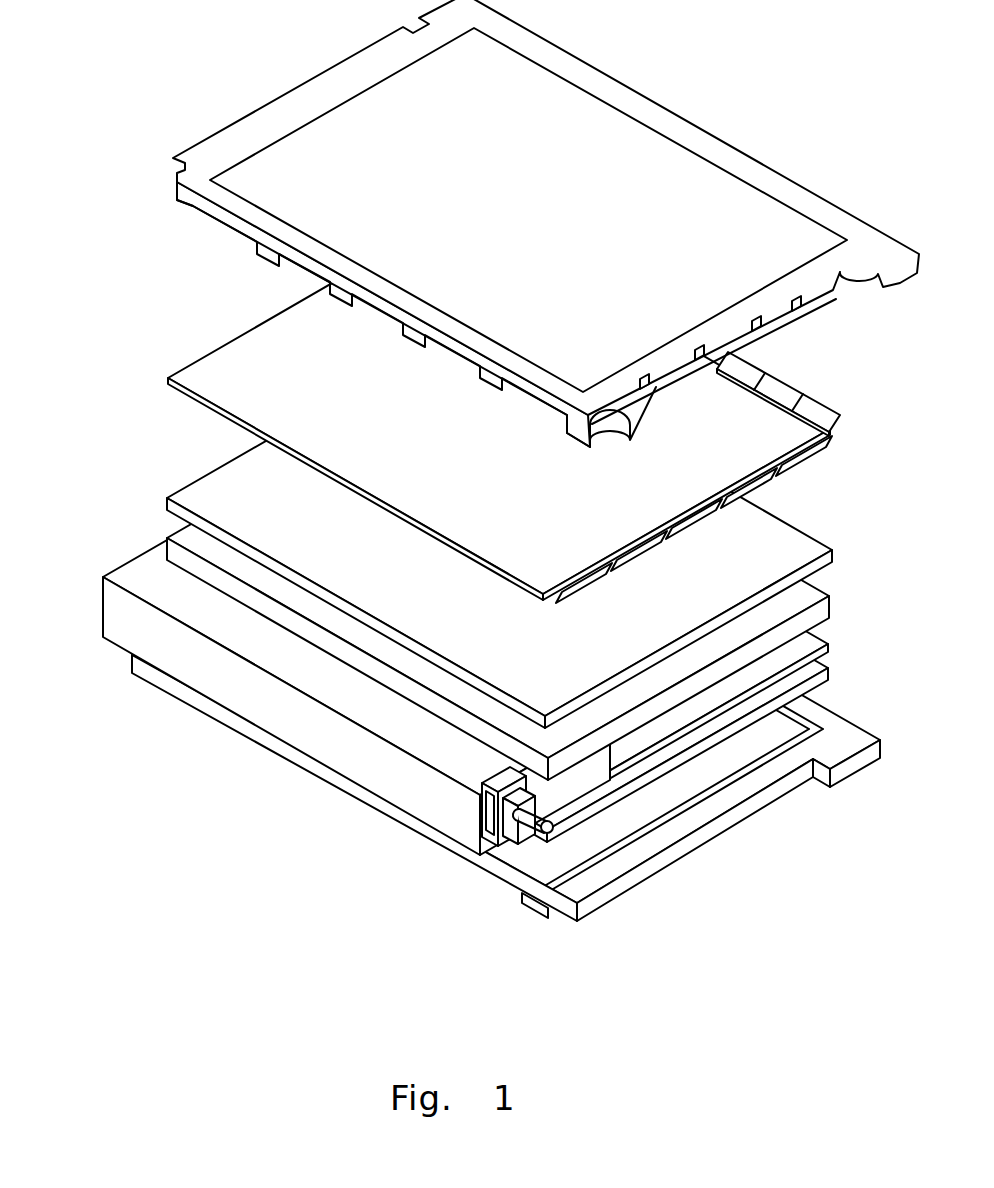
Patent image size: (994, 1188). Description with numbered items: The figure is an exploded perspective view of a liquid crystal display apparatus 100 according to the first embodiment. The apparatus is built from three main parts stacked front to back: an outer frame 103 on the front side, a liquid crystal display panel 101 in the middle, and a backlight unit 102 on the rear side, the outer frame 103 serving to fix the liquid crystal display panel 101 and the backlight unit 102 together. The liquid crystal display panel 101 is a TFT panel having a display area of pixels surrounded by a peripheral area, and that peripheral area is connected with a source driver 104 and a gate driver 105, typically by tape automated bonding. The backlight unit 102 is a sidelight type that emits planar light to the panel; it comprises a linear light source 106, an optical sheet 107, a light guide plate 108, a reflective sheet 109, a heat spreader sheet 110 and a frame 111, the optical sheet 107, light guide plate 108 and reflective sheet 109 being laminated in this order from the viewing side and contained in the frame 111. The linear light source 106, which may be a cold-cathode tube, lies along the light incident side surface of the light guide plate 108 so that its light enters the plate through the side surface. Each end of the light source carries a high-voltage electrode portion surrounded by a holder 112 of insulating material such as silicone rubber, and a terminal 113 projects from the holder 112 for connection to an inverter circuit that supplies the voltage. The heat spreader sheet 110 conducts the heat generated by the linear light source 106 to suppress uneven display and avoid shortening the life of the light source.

The liquid crystal display apparatus 100 is at (228, 45).
The liquid crystal display panel 101 is at (228, 360).
The backlight unit 102 is at (81, 500).
The outer frame 103 is at (742, 165).
The source driver 104 is at (822, 413).
The gate driver 105 is at (810, 462).
The linear light source 106 is at (523, 893).
The optical sheet 107 is at (797, 550).
The light guide plate 108 is at (833, 600).
The reflective sheet 109 is at (833, 653).
The heat spreader sheet 110 is at (833, 672).
The frame 111 is at (866, 766).
The holder 112 is at (490, 834).
The terminal 113 is at (553, 829).